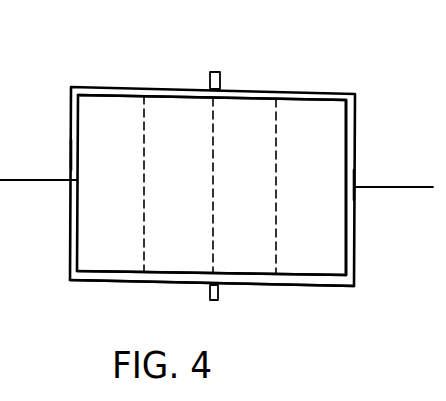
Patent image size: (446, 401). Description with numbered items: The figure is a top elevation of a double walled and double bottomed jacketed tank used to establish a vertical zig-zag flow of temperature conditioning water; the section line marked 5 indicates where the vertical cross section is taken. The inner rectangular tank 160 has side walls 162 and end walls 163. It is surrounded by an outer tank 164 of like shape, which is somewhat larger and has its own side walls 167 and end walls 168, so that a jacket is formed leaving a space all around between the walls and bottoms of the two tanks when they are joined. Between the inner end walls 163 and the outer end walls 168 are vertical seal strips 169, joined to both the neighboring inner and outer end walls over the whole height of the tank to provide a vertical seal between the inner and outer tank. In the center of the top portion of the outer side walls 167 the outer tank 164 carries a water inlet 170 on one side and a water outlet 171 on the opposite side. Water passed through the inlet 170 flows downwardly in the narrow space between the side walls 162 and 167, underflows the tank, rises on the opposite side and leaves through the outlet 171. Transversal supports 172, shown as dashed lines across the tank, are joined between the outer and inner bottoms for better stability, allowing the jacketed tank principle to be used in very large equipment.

The rectangular tank 160 is at (73, 127).
The side walls 162 is at (308, 97).
The end walls 163 is at (348, 128).
The outer tank 164 is at (78, 293).
The side walls 167 is at (260, 92).
The end walls 168 is at (71, 154).
The vertical seal strips 169 is at (350, 185).
The water inlet 170 is at (213, 72).
The water outlet 171 is at (218, 290).
The transversal supports 172 is at (144, 110).
The section line 5- 5 is at (31, 200).